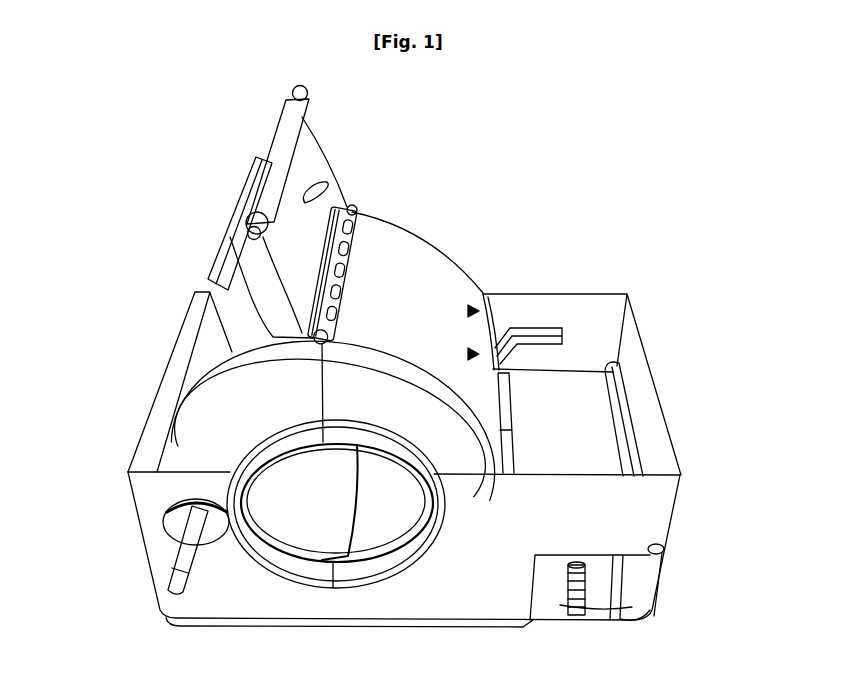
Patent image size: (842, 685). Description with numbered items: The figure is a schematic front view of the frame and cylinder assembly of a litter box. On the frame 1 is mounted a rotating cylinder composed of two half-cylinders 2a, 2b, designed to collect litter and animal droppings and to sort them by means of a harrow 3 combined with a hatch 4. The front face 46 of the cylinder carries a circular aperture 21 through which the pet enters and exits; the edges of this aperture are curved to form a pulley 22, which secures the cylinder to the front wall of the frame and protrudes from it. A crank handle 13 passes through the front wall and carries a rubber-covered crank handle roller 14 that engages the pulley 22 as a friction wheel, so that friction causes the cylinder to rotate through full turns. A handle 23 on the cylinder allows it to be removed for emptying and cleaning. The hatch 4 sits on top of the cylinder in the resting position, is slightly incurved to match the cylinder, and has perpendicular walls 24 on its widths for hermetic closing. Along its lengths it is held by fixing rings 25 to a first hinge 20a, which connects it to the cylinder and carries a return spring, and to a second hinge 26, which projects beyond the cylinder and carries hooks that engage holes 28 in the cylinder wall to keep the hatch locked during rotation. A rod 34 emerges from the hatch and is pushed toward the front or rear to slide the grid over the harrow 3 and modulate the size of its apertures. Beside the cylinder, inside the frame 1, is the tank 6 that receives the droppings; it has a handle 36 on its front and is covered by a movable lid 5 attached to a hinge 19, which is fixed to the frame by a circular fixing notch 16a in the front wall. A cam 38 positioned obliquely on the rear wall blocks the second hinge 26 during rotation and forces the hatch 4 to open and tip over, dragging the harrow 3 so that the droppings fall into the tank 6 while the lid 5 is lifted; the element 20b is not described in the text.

The frame 1 is at (683, 474).
The half-cylinder 2a is at (417, 290).
The half-cylinder 2b is at (207, 420).
The harrow 3 is at (240, 205).
The hatch 4 is at (303, 148).
The lid 5 is at (580, 426).
The tank 6 is at (622, 587).
The crank handle 13 is at (172, 517).
The crank handle roller 14 is at (185, 495).
The fixing notch 16a is at (664, 548).
The hinge 19 is at (624, 297).
The first hinge 20a is at (358, 203).
The base plate 20b is at (178, 603).
The aperture 21 is at (378, 512).
The pulley 22 is at (230, 464).
The handle 23 is at (485, 295).
The perpendicular walls 24 is at (248, 266).
The fixing rings 25 is at (279, 131).
The second hinge 26 is at (296, 89).
The holes 28 is at (213, 357).
The rod 34 is at (322, 182).
The handle 36 is at (565, 611).
The cam 38 is at (541, 338).
The front face 46 is at (347, 402).